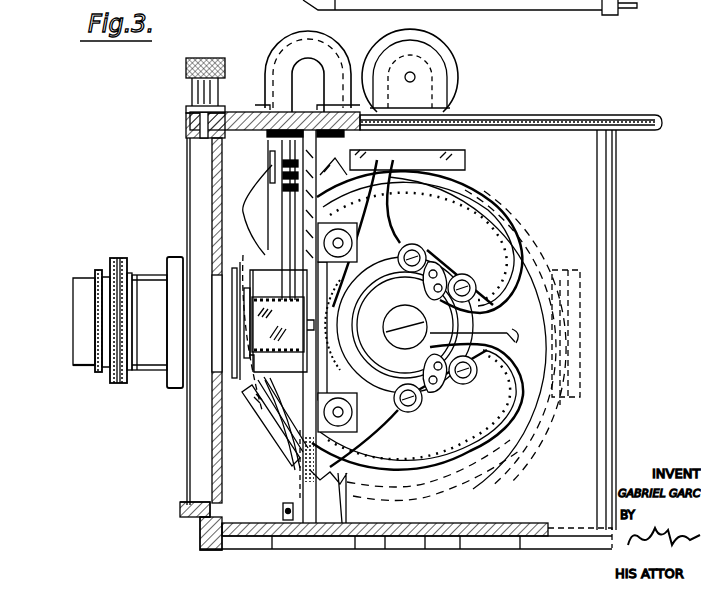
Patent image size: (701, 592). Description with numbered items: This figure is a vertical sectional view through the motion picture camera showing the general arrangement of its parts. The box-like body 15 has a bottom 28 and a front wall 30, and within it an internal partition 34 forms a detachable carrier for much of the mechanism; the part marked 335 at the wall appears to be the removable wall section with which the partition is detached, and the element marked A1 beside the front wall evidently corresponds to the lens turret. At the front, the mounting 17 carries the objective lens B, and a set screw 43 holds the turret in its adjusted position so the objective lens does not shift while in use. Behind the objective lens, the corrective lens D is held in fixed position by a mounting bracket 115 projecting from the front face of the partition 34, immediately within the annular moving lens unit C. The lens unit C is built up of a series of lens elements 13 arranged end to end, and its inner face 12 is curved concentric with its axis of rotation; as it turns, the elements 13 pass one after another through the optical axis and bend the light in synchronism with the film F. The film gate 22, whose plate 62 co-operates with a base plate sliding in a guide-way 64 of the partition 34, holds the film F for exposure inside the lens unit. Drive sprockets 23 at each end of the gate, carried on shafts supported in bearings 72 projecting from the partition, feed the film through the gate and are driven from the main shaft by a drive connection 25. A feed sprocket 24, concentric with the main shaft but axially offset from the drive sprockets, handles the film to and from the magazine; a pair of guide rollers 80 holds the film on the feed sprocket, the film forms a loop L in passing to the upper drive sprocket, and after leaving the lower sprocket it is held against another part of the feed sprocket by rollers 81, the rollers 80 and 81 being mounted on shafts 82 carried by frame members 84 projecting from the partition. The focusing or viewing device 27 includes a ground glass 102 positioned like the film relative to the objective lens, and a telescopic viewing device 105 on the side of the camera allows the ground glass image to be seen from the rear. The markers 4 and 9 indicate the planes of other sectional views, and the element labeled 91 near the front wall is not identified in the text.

The telescopic viewing device 105 is at (500, 12).
The section line 4 is at (410, 21).
The set screw 43 is at (188, 78).
The housing wall A1 is at (190, 176).
The mounting for the objective lens 17 is at (183, 464).
The bottom 28 is at (272, 549).
The body 15 is at (566, 292).
The objective lens B is at (145, 365).
The section line 9 is at (53, 303).
The corrective lens D is at (250, 312).
The ground glass 102 is at (278, 324).
The plate 335 is at (318, 285).
The focusing or viewing device 27 is at (268, 367).
The guide-way 64 is at (271, 362).
The mounting bracket 115 is at (245, 255).
The front wall 30 is at (220, 160).
The rod 91 is at (263, 191).
The inner face 12 is at (392, 156).
The moving lens unit C is at (470, 172).
The drive sprockets 23 is at (350, 437).
The gate 22 is at (399, 325).
The plate 62 is at (404, 338).
The loop L is at (505, 250).
The bearings 72 is at (352, 243).
The film F is at (395, 218).
The guide rollers 80 is at (430, 260).
The frame members 84 is at (460, 274).
The drive connection 25 is at (397, 398).
The shafts 82 is at (420, 405).
The rollers 81 is at (462, 385).
The feed sprocket 24 is at (478, 340).
The lens elements 13 is at (271, 430).
The internal partition 34 is at (295, 496).